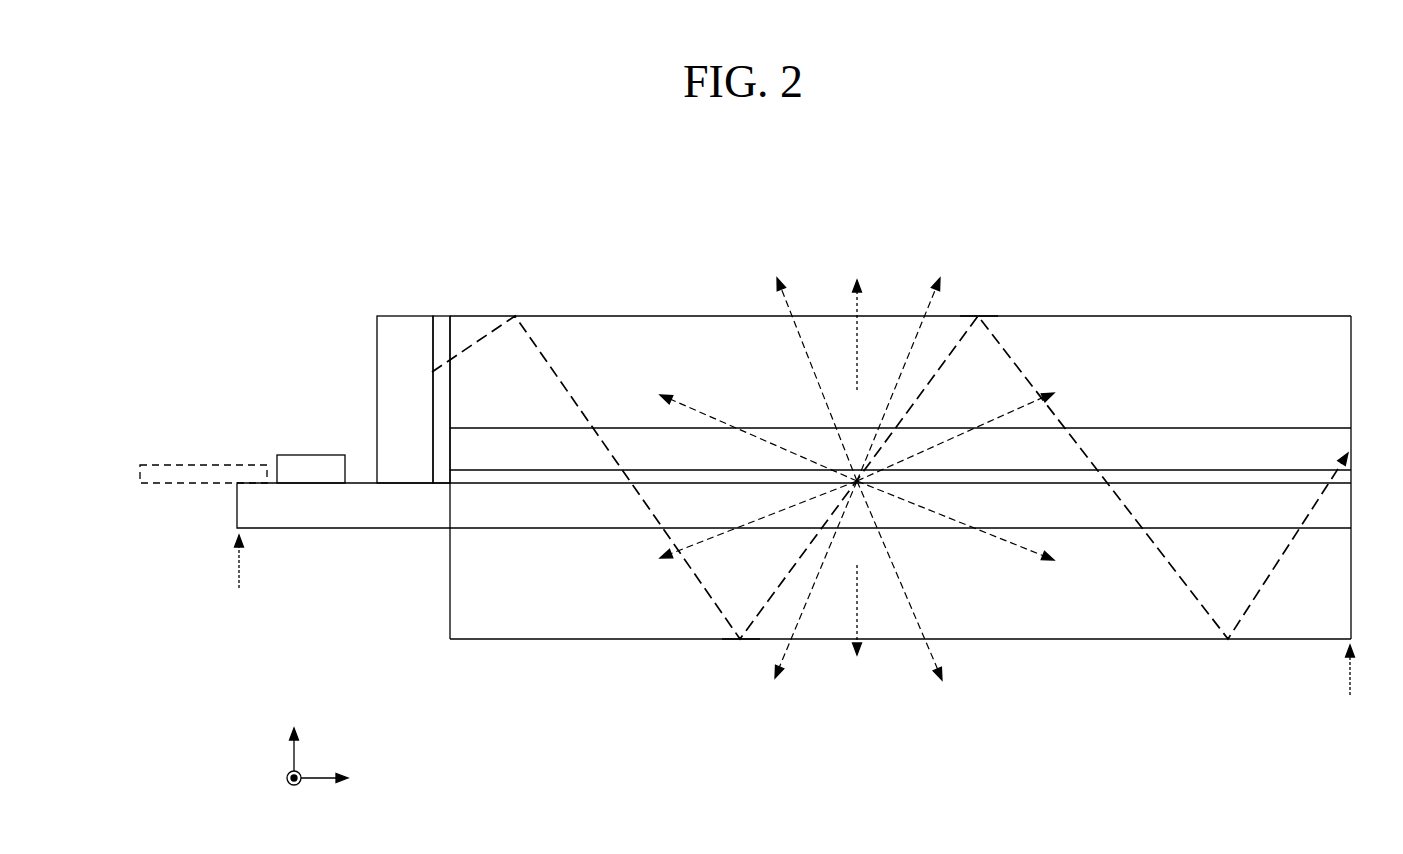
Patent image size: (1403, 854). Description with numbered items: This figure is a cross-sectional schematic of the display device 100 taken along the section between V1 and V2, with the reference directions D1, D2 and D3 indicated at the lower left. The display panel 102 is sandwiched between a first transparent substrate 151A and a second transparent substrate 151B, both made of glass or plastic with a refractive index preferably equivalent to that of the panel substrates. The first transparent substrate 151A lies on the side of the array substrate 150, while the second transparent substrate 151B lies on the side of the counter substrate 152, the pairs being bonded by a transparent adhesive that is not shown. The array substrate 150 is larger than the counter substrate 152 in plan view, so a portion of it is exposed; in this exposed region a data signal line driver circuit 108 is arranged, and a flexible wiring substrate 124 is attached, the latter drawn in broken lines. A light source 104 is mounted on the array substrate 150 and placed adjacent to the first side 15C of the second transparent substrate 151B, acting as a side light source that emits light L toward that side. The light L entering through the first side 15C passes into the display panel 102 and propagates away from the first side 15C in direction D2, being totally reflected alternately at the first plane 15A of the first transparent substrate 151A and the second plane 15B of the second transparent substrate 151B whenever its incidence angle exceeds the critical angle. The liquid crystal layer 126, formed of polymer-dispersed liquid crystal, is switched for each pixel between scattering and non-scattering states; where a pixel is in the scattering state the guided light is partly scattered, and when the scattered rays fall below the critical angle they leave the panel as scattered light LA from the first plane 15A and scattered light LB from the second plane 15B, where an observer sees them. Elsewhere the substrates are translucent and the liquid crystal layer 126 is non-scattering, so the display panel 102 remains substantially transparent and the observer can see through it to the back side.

The display device 100 is at (480, 205).
The display panel 102 is at (568, 688).
The light source 104 is at (403, 325).
The data signal line driver circuit 108 is at (315, 465).
The flexible wiring substrate 124 is at (182, 463).
The liquid crystal layer 126 is at (1085, 476).
The array substrate 150 is at (490, 510).
The counter substrate 152 is at (547, 448).
The first transparent substrate 151A is at (1163, 610).
The second transparent substrate 151B is at (1122, 333).
The first plane 15A is at (753, 641).
The second plane 15B is at (985, 316).
The first side 15C is at (441, 325).
The light L is at (570, 380).
The scattered light LA is at (856, 631).
The scattered light LB is at (855, 323).
The section line end V1 is at (239, 573).
The section line end V2 is at (1351, 684).
The direction D1 is at (279, 791).
The direction D2 is at (343, 781).
The direction D3 is at (295, 736).